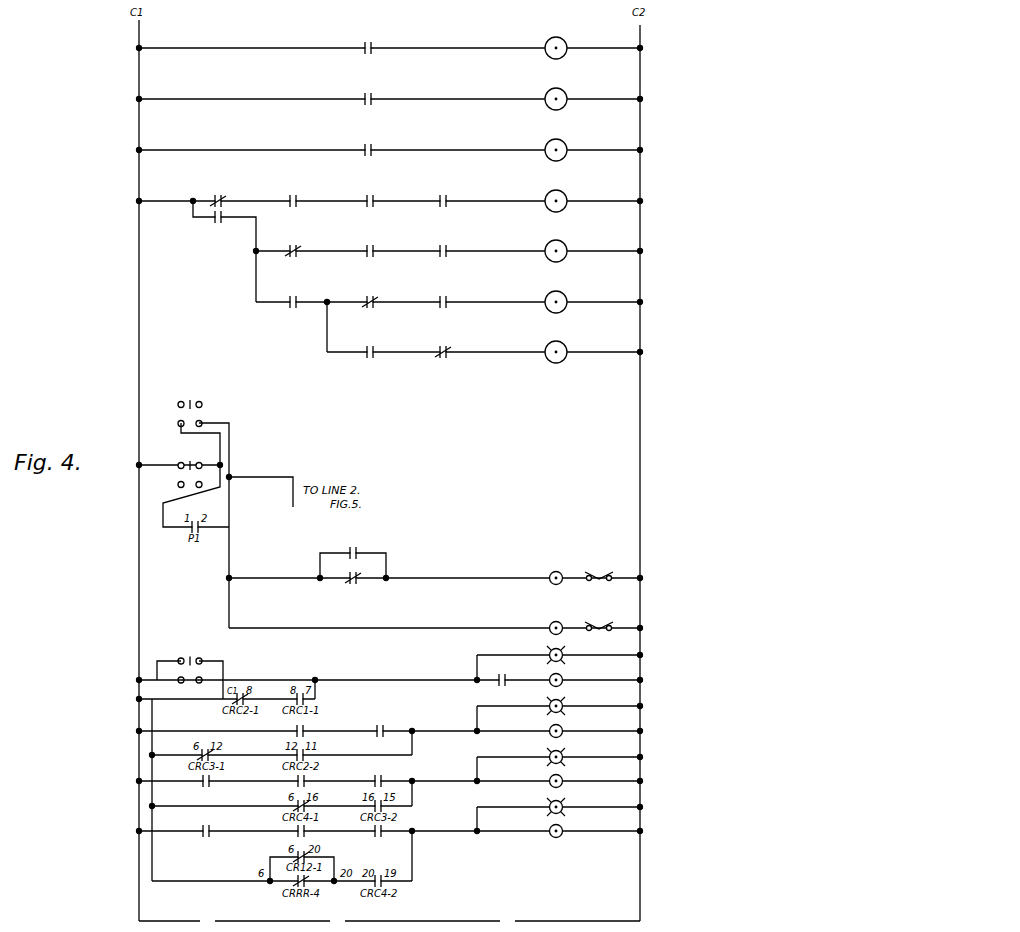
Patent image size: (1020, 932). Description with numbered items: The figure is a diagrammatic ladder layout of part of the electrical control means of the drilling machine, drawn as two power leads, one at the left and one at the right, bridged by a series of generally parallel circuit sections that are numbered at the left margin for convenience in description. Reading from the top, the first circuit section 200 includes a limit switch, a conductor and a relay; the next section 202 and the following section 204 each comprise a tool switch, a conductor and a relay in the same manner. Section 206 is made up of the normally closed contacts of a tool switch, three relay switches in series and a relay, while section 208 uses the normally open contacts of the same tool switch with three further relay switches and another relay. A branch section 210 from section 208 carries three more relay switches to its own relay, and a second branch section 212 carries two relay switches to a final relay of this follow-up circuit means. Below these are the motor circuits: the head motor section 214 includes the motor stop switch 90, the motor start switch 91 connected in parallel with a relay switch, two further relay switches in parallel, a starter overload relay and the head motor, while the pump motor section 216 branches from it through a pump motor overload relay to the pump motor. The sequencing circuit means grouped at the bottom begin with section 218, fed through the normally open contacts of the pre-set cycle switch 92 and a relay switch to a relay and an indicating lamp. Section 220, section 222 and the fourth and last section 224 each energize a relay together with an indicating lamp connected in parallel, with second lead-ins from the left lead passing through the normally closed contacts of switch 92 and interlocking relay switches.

The motor stop switch 90 is at (186, 476).
The motor start switch 91 is at (185, 414).
The pre-set cycle switch 92 is at (203, 670).
The first circuit section 200 is at (399, 53).
The section 202 is at (399, 104).
The section 204 is at (399, 155).
The section 206 is at (427, 244).
The section 208 is at (427, 256).
The branch section 210 is at (427, 320).
The second branch section 212 is at (427, 357).
The head motor circuit section 214 is at (426, 568).
The pump motor section 216 is at (425, 630).
The section 218 is at (402, 670).
The main section 220 is at (402, 724).
The section 222 is at (402, 775).
The fourth and last section 224 is at (402, 837).